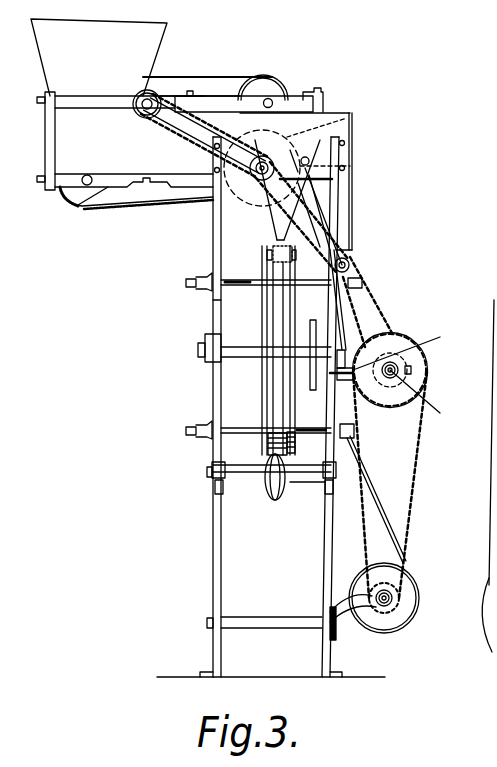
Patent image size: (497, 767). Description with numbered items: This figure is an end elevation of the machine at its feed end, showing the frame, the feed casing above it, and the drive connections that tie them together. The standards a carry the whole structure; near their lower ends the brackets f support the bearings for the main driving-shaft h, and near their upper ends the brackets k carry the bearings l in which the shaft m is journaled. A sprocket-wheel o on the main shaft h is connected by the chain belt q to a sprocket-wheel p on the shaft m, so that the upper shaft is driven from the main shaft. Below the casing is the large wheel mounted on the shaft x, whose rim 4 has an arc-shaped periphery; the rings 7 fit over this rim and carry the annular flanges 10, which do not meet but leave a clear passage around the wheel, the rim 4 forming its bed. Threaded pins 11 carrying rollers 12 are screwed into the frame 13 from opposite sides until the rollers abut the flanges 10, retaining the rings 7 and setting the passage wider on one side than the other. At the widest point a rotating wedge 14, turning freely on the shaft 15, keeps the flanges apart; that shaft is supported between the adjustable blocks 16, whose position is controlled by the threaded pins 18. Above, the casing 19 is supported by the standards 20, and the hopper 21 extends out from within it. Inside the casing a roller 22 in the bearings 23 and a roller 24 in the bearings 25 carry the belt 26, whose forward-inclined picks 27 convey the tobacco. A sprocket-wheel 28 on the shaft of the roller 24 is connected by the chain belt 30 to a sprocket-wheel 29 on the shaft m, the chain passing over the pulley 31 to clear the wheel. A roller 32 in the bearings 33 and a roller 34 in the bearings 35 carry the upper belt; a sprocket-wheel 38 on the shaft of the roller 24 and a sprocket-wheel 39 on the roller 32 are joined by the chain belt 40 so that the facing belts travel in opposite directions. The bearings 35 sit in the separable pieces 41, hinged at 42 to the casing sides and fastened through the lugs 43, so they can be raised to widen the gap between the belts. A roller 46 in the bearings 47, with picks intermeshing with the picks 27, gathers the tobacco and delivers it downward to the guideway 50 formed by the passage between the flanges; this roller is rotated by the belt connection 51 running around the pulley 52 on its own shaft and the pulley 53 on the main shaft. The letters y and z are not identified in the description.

The rim 4 is at (273, 380).
The rings 7 is at (262, 302).
The annular flanges 10 is at (263, 410).
The threaded pins 11 is at (190, 278).
The rollers 12 is at (262, 280).
The frame 13 is at (212, 309).
The rotating wedge 14 is at (270, 495).
The shaft 15 is at (307, 480).
The adjustable blocks 16 is at (212, 484).
The threaded pins 18 is at (216, 497).
The casing 19 is at (154, 133).
The standards 20 is at (212, 219).
The hopper 21 is at (99, 57).
The roller 22 is at (70, 205).
The bearings 23 is at (89, 185).
The roller 24 is at (250, 218).
The bearings 25 is at (270, 160).
The belt 26 is at (147, 204).
The picks 27 is at (122, 204).
The sprocket-wheel 28 is at (350, 120).
The sprocket-wheel 29 is at (418, 348).
The chain belt 30 is at (375, 318).
The pulley 31 is at (348, 262).
The roller 32 is at (153, 87).
The bearings 33 is at (204, 110).
The roller 34 is at (263, 83).
The bearings 35 is at (270, 98).
The sprocket-wheel 38 is at (266, 165).
The sprocket-wheel 39 is at (145, 115).
The chain belt 40 is at (188, 146).
The separable pieces 41 is at (218, 103).
The hinge 42 is at (218, 77).
The lugs 43 is at (326, 93).
The roller 46 is at (333, 158).
The bearings 47 is at (309, 160).
The guideway 50 is at (272, 249).
The belt connection 51 is at (395, 496).
The pulley 52 is at (352, 168).
The pulley 53 is at (398, 620).
The standards a is at (222, 582).
The brackets f is at (350, 622).
The main driving-shaft h is at (397, 593).
The brackets k is at (396, 341).
The bearings l is at (411, 368).
The shaft m is at (424, 394).
The sprocket-wheel o is at (395, 607).
The sprocket-wheel p is at (410, 372).
The chain belt q is at (416, 462).
The shaft x is at (236, 352).
The bracket y is at (210, 340).
The plate z is at (314, 390).